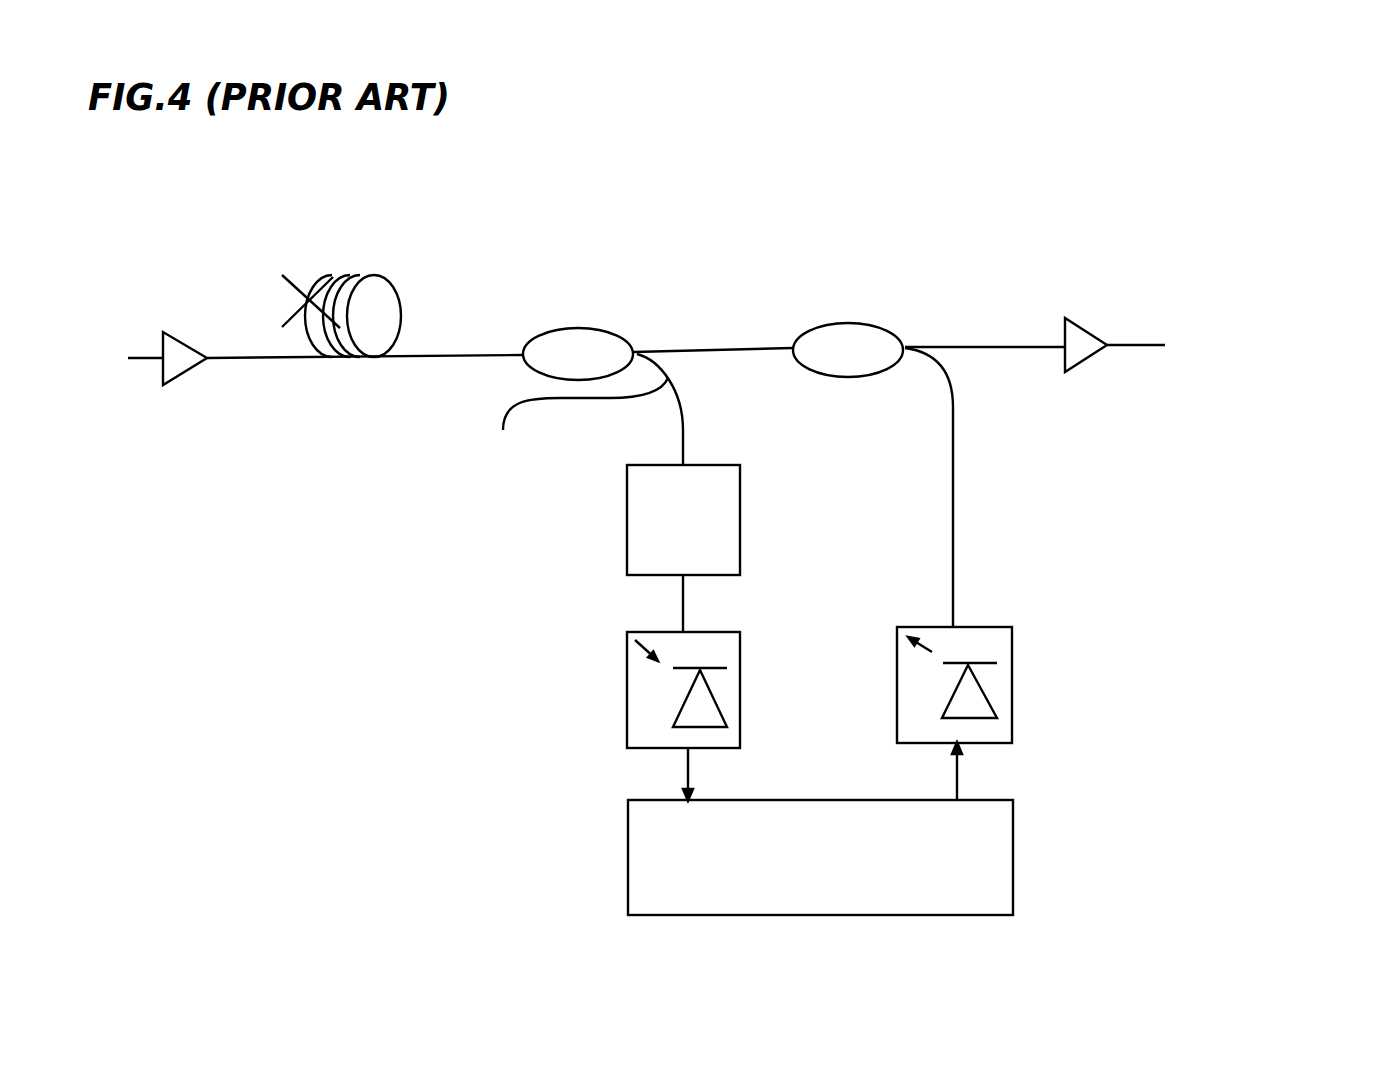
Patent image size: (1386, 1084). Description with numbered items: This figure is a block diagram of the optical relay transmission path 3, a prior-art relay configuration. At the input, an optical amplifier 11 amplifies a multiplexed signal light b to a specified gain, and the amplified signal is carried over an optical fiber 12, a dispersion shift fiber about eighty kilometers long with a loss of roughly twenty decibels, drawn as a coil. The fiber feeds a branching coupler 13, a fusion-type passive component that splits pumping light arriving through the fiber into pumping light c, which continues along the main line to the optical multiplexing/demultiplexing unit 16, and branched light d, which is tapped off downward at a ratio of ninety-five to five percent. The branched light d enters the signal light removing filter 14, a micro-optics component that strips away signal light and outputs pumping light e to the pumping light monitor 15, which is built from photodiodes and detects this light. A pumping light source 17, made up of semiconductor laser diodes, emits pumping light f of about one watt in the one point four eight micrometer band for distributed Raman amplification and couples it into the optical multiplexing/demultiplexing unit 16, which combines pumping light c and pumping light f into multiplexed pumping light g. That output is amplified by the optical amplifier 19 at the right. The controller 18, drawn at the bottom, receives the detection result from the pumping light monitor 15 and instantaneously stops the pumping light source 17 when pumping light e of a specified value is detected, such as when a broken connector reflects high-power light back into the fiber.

The optical relay transmission path 3 is at (773, 212).
The optical amplifier 11 is at (185, 372).
The optical fiber 12 is at (262, 360).
The branching coupler 13 is at (530, 340).
The signal light removing filter 14 is at (718, 465).
The pumping light monitor 15 is at (700, 632).
The optical multiplexing/demultiplexing unit 16 is at (868, 323).
The pumping light source 17 is at (985, 627).
The controller 18 is at (1013, 858).
The optical amplifier 19 is at (1078, 364).
The multiplexed signal light b is at (131, 361).
The pumping light c is at (668, 350).
The branched light d is at (585, 425).
The pumping light e is at (683, 603).
The pumping light f is at (955, 508).
The multiplexed pumping light g is at (990, 346).